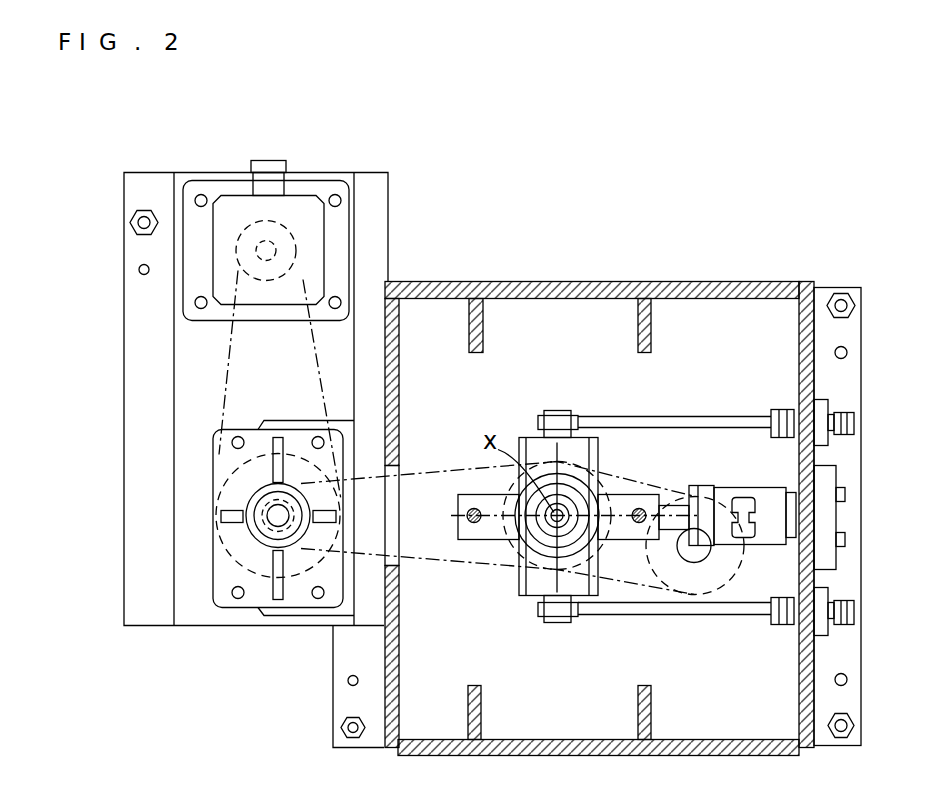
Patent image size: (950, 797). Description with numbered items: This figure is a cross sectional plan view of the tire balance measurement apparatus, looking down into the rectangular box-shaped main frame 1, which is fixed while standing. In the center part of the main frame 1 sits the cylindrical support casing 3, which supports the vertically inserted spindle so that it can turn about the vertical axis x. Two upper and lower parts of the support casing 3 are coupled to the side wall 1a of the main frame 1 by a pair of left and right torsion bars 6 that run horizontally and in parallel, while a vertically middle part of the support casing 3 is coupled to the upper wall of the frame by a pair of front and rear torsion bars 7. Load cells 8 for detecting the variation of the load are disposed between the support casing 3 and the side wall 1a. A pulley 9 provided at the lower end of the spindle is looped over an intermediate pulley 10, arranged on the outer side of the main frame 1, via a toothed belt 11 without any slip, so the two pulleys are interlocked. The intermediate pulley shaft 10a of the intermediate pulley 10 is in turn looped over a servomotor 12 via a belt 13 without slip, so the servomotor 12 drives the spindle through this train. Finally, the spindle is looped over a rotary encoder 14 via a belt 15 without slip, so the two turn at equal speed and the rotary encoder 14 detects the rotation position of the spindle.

The main frame 1 is at (587, 272).
The side wall 1a is at (798, 358).
The support casing 3 is at (583, 454).
The torsion bars 6 is at (692, 414).
The torsion bars 7 is at (467, 516).
The load cell 8 is at (753, 487).
The pulley 9 is at (508, 542).
The intermediate pulley 10 is at (257, 537).
The intermediate pulley shaft 10a is at (265, 505).
The toothed belt 11 is at (440, 540).
The servomotor 12 is at (297, 193).
The belt 13 is at (223, 395).
The rotary encoder 14 is at (710, 552).
The belt 15 is at (640, 580).